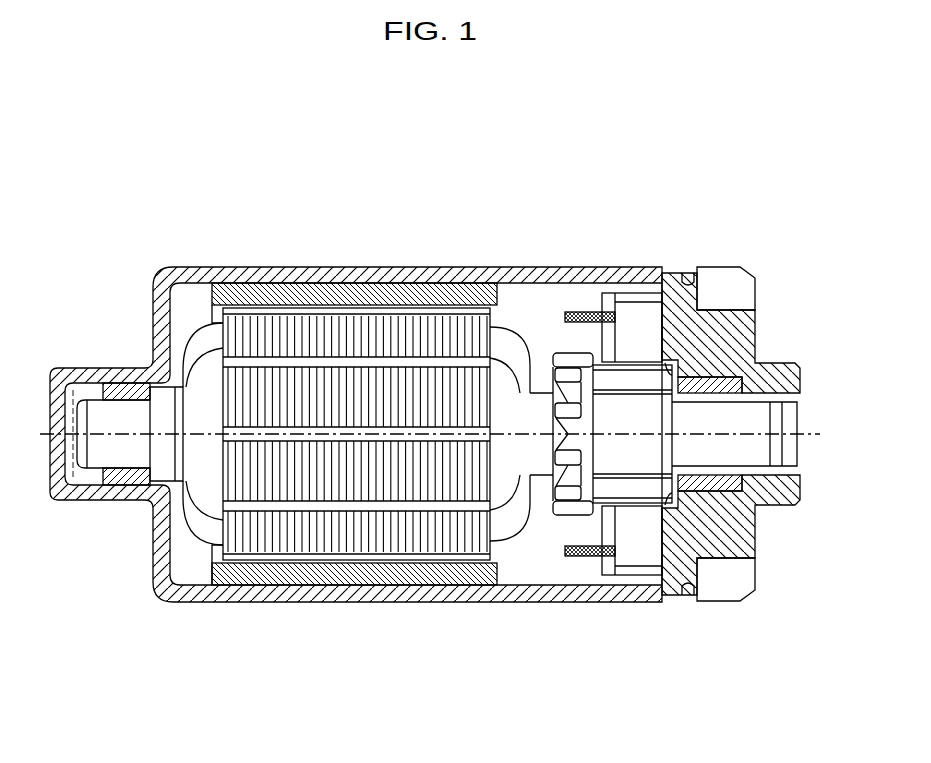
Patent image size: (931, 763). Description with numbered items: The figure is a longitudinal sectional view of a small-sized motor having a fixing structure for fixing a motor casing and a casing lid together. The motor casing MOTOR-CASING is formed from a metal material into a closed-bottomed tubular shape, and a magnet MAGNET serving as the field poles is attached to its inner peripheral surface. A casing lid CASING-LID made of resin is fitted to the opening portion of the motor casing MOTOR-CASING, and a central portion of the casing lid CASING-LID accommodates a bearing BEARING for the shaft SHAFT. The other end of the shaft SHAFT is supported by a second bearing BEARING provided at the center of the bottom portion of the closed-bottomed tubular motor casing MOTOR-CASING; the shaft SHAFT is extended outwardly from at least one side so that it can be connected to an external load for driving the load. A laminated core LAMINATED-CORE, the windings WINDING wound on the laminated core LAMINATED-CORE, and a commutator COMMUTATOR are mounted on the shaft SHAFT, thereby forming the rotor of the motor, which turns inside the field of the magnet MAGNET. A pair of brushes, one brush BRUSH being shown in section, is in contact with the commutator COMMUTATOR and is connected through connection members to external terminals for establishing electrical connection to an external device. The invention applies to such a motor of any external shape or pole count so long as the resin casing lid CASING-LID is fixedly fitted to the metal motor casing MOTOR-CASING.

The motor casing MOTOR-CASING is at (228, 273).
The magnet MAGNET is at (377, 293).
The laminated core LAMINATED-CORE is at (372, 470).
The windings WINDING is at (197, 468).
The shaft SHAFT is at (117, 453).
The bearing BEARING is at (120, 388).
The brush BRUSH is at (628, 332).
The commutator COMMUTATOR is at (622, 453).
The casing lid CASING-LID is at (728, 325).